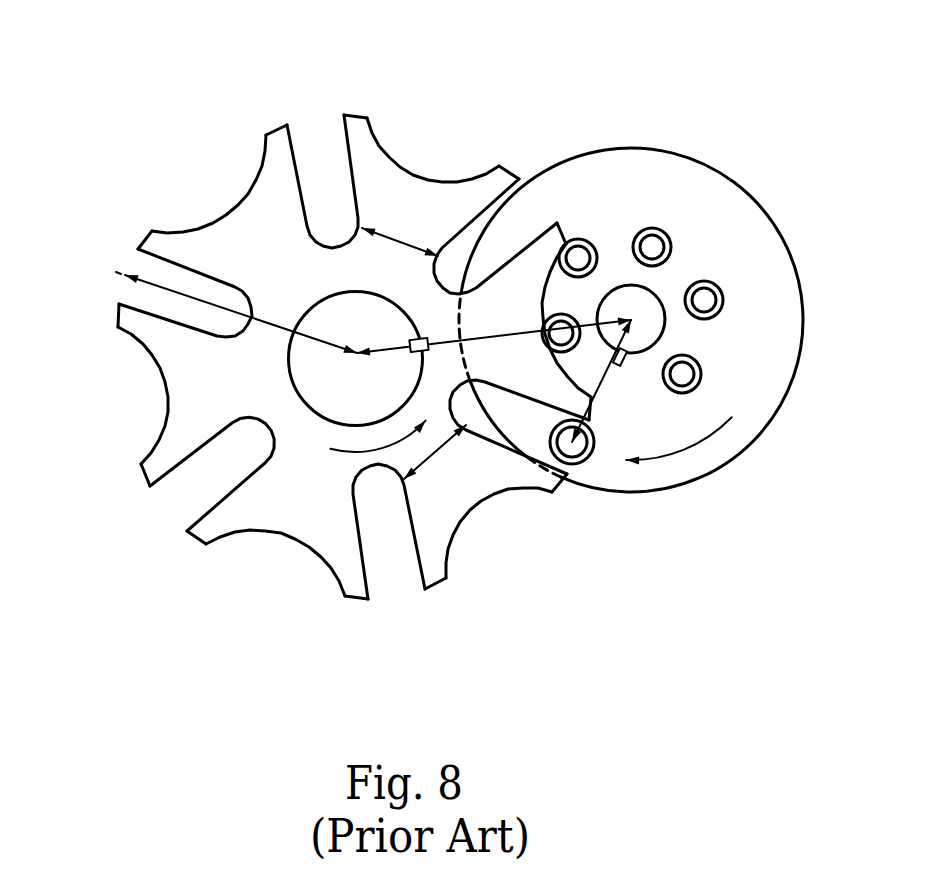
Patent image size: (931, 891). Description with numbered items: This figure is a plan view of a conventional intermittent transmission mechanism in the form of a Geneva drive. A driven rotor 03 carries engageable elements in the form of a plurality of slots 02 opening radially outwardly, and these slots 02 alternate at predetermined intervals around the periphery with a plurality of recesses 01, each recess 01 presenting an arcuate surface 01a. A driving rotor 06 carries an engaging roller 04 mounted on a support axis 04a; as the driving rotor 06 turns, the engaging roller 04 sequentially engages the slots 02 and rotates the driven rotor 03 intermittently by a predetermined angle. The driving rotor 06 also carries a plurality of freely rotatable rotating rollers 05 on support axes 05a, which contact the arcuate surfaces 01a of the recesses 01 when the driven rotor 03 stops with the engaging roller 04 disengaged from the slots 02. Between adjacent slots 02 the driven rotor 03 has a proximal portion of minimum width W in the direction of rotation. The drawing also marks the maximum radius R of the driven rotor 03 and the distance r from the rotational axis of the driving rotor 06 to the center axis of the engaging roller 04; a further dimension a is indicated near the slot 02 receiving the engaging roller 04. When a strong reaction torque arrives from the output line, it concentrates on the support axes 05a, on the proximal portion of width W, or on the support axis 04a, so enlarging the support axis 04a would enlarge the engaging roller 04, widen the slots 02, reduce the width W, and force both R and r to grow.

The recess 01 is at (245, 187).
The arcuate surface 01a is at (192, 226).
The slot 02 is at (304, 150).
The driven rotor 03 is at (160, 137).
The engaging roller 04 is at (589, 457).
The support axis 04a is at (572, 446).
The rotating roller 05 is at (671, 246).
The support axis 05a is at (578, 240).
The driving rotor 06 is at (721, 144).
The minimum width W is at (393, 235).
The maximum radius R is at (183, 294).
The distance r is at (607, 388).
The clearance a is at (531, 390).